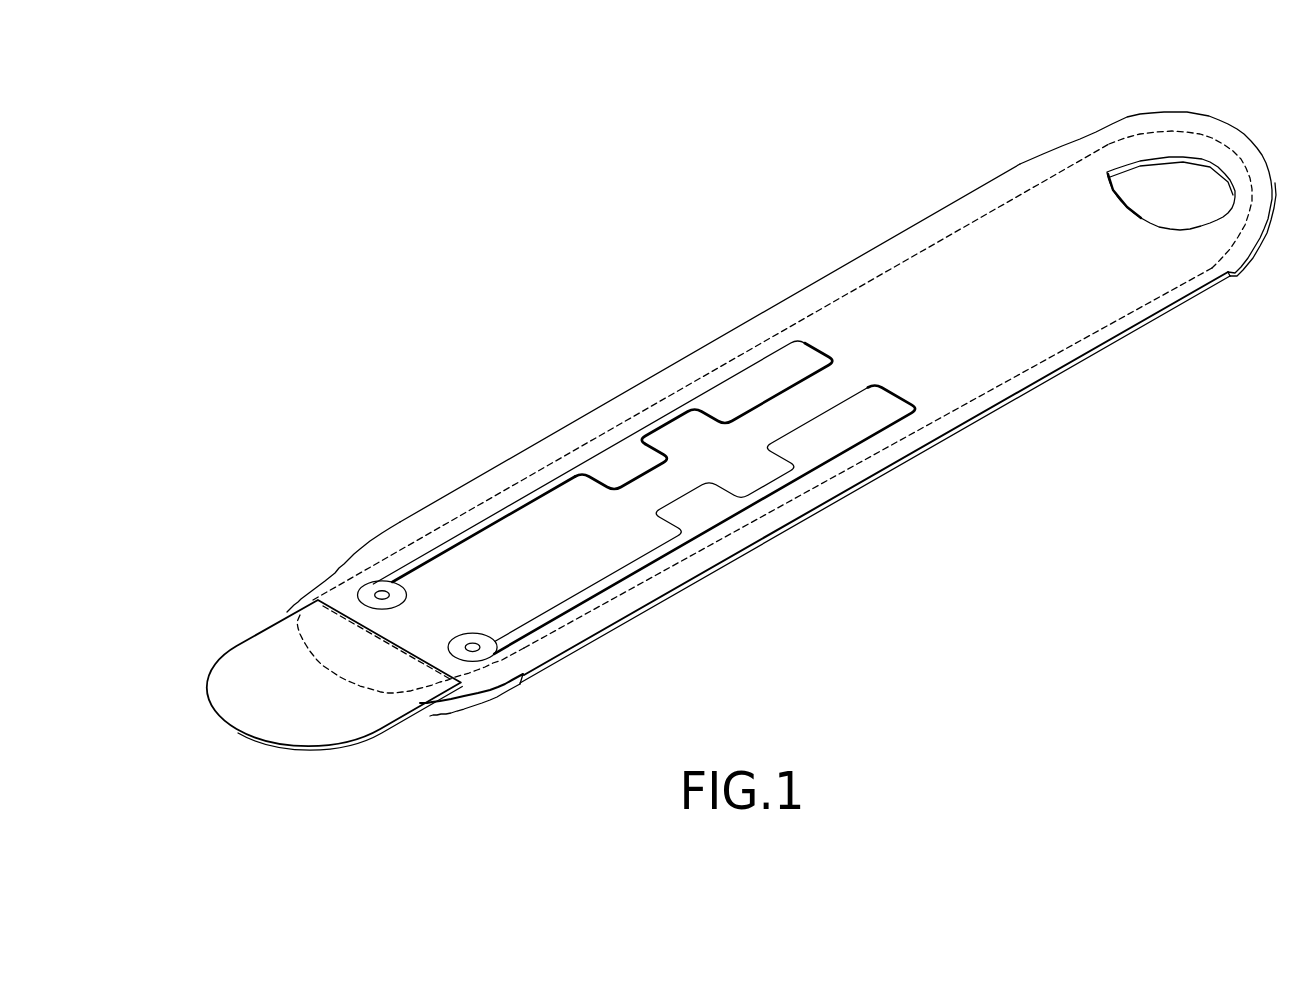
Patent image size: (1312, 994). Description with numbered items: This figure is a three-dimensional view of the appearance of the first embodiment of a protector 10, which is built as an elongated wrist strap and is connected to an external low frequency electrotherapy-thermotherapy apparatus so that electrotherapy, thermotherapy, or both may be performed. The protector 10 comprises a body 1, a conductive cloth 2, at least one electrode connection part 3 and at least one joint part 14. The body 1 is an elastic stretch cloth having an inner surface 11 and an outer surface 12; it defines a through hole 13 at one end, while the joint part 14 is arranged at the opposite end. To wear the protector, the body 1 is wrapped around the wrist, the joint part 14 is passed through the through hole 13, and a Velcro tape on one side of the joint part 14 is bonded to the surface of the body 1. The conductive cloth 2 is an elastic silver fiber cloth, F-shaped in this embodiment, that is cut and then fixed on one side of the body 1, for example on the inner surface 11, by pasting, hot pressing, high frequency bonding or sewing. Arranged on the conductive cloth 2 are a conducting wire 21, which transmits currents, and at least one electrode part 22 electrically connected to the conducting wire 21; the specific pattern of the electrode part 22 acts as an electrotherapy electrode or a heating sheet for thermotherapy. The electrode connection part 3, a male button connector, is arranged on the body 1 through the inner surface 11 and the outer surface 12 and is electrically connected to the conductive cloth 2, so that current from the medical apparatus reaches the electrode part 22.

The protector 10 is at (455, 237).
The body 1 is at (927, 206).
The inner surface 11 is at (1092, 147).
The outer surface 12 is at (814, 514).
The through hole 13 is at (1185, 185).
The conductive cloth 2 is at (822, 338).
The conducting wire 21 is at (487, 522).
The electrode part 22 is at (617, 468).
The electrode connection part 3 is at (375, 596).
The joint part 14 is at (248, 655).